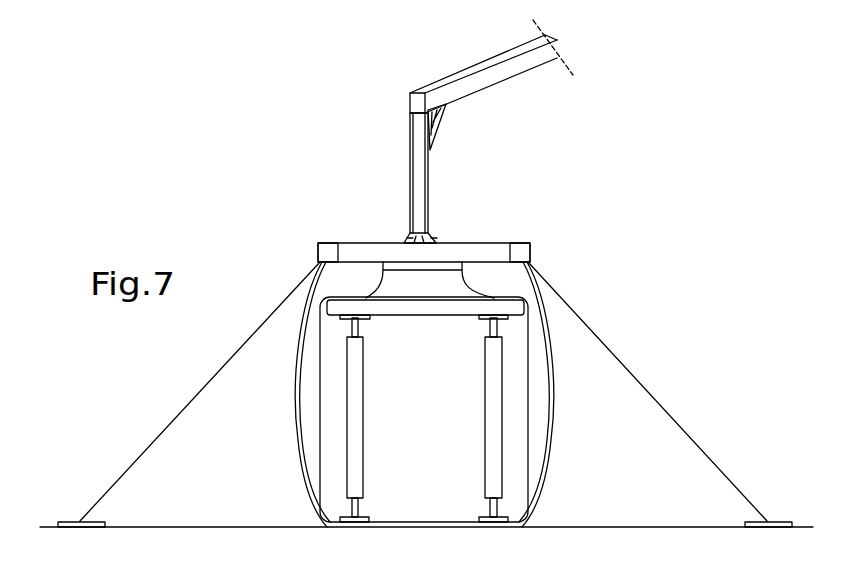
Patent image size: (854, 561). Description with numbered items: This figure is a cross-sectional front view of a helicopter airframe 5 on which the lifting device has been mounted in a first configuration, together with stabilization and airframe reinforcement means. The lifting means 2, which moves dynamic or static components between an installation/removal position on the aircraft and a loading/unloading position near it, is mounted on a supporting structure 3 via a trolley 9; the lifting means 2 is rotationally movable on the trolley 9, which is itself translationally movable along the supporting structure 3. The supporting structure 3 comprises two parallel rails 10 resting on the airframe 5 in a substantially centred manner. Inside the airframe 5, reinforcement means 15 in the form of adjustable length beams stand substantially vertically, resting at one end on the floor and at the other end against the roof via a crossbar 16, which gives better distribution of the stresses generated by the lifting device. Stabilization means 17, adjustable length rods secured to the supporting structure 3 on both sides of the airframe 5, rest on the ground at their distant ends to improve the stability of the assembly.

The lifting means 2 is at (431, 182).
The supporting structure 3 is at (360, 243).
The airframe 5 is at (299, 421).
The trolley 9 is at (478, 242).
The parallel rails 10 is at (318, 257).
The airframe reinforcement means 15 is at (485, 441).
The crossbar 16 is at (403, 316).
The stabilization means 17 is at (197, 393).